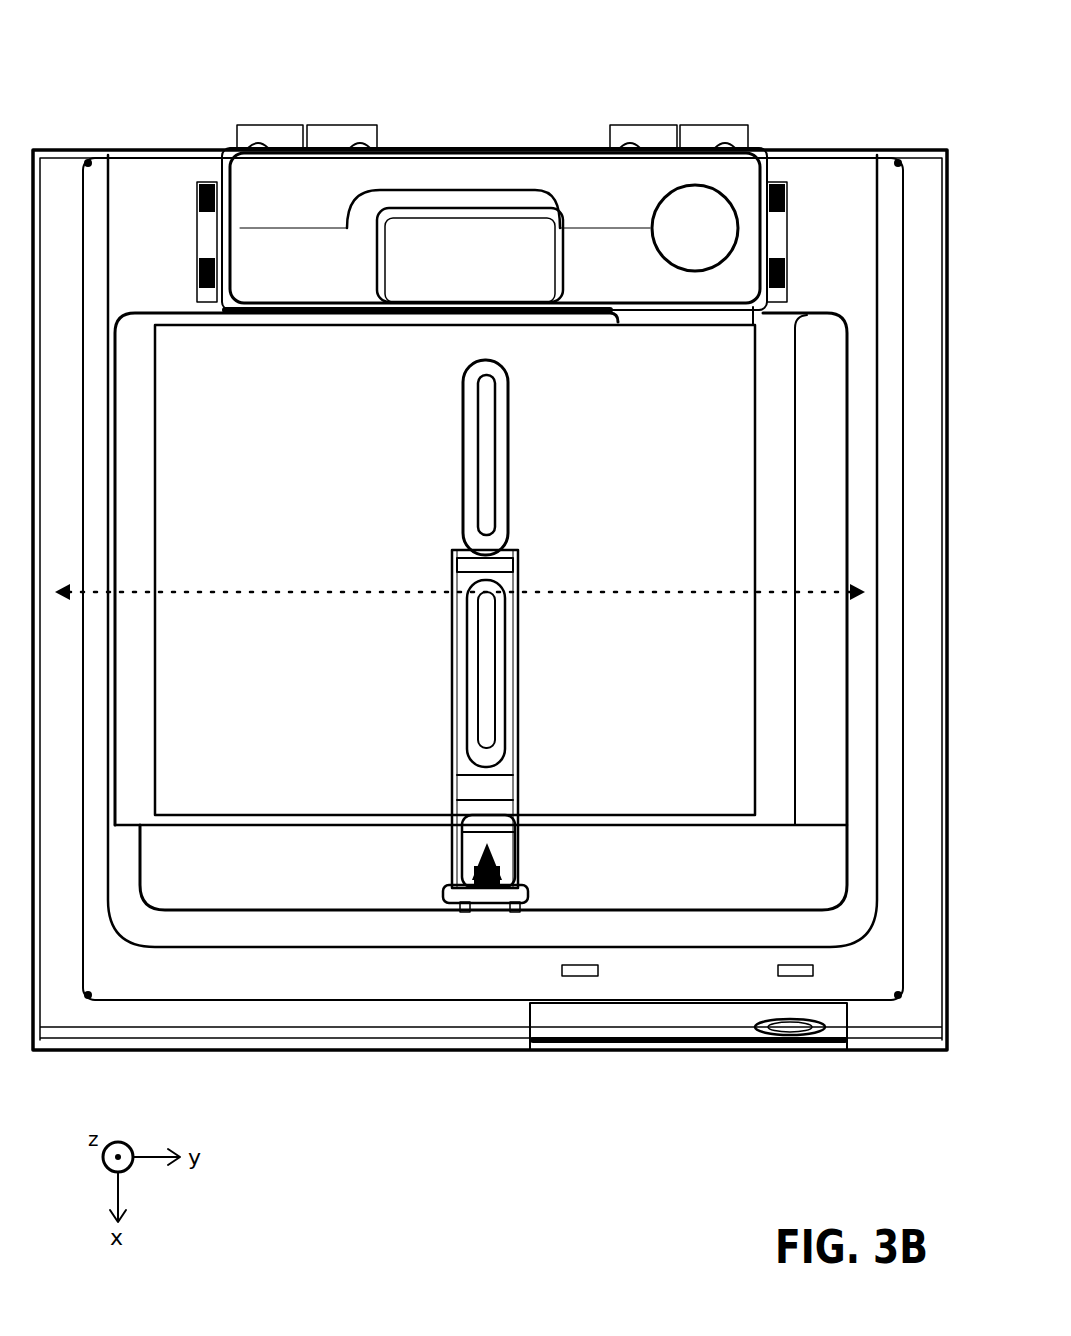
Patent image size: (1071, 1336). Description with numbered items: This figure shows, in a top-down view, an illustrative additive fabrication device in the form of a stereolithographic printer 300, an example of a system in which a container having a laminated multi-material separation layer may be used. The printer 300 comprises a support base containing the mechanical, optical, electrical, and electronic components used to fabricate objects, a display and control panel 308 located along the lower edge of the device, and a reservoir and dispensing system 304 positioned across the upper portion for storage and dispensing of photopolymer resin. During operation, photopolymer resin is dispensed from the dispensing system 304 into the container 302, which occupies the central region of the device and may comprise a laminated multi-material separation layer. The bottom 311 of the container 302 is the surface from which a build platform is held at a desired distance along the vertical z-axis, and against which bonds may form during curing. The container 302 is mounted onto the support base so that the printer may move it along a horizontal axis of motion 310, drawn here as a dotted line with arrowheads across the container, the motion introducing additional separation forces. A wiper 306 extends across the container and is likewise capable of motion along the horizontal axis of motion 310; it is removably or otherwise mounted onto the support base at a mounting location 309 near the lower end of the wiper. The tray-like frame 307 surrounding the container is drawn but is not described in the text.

The stereolithographic printer 300 is at (120, 33).
The container 302 is at (800, 318).
The reservoir and dispensing system 304 is at (733, 172).
The wiper 306 is at (502, 544).
The tray 307 is at (285, 825).
The display and control panel 308 is at (682, 1010).
The wiper mounting location 309 is at (478, 915).
The horizontal axis of motion 310 is at (277, 598).
The bottom of container 311 is at (455, 561).